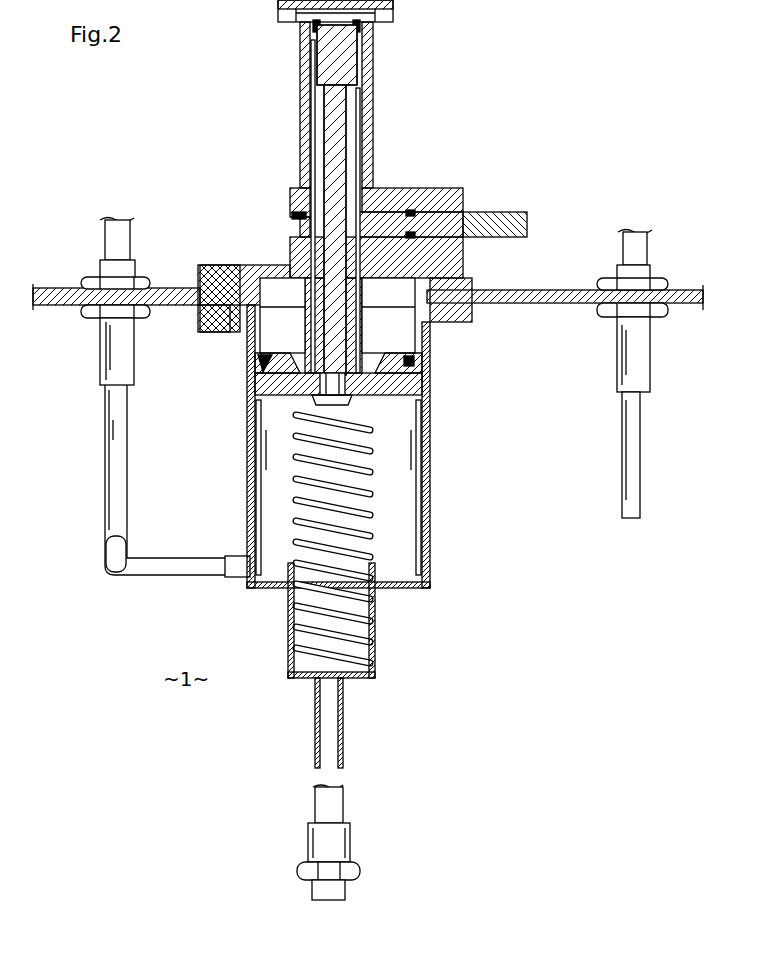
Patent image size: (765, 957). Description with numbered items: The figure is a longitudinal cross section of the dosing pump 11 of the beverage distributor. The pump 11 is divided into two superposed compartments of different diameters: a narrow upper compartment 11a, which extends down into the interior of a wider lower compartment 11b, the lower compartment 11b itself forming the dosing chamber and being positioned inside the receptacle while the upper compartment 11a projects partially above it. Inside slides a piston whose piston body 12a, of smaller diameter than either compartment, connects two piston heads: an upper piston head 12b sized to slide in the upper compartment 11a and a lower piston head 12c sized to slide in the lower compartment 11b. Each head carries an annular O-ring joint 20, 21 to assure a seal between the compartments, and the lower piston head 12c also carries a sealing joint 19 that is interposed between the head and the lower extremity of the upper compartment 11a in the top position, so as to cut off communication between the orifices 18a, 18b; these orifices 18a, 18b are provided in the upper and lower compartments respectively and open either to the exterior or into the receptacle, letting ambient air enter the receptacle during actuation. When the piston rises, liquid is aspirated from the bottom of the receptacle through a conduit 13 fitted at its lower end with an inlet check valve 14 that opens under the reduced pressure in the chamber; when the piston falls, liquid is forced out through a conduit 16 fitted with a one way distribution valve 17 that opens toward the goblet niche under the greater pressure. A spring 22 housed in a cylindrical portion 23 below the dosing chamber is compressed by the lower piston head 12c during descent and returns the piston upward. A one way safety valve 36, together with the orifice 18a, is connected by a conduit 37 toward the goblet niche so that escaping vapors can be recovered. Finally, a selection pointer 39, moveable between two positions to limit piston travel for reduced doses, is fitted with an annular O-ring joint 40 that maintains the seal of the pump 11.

The pump 11 is at (383, 110).
The upper compartment 11a is at (320, 123).
The lower compartment 11b is at (403, 506).
The piston body 12a is at (333, 165).
The upper piston head 12b is at (350, 66).
The lower piston head 12c is at (395, 393).
The conduit 13 is at (332, 740).
The inlet check valve 14 is at (349, 862).
The conduit 16 is at (117, 482).
The one way distribution valve 17 is at (112, 343).
The orifice 18a is at (292, 219).
The orifice 18b is at (252, 337).
The sealing joint 19 is at (430, 378).
The annular seal 20 is at (252, 378).
The annular seal 21 is at (395, 17).
The spring 22 is at (370, 533).
The cylindrical portion 23 is at (360, 648).
The safety valve 36 is at (620, 364).
The conduit 37 is at (633, 237).
The selection pointer 39 is at (495, 212).
The annular O-ring joint 40 is at (410, 210).